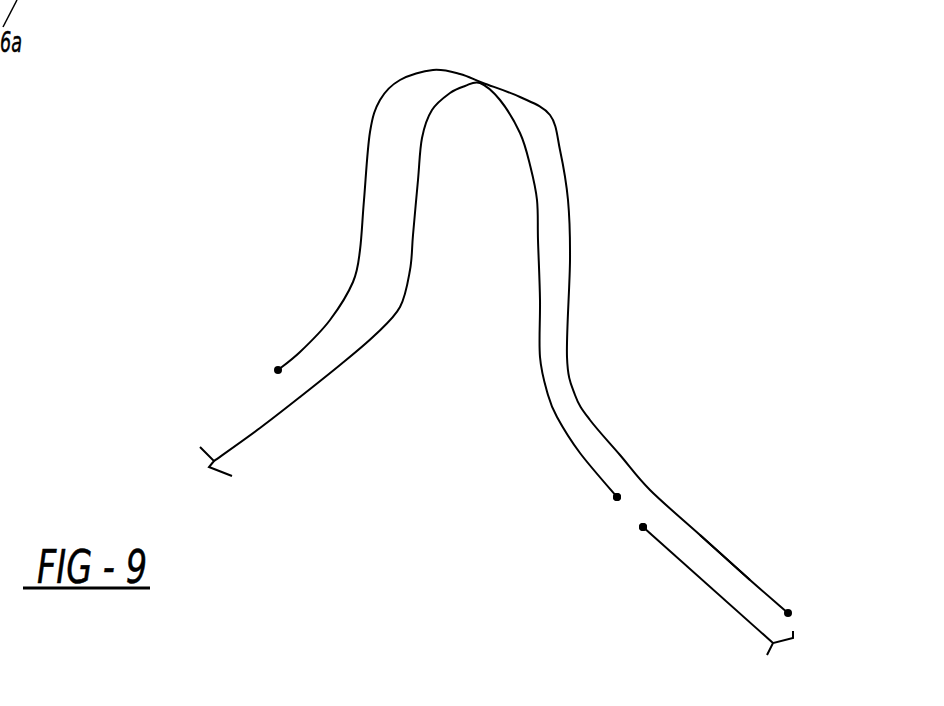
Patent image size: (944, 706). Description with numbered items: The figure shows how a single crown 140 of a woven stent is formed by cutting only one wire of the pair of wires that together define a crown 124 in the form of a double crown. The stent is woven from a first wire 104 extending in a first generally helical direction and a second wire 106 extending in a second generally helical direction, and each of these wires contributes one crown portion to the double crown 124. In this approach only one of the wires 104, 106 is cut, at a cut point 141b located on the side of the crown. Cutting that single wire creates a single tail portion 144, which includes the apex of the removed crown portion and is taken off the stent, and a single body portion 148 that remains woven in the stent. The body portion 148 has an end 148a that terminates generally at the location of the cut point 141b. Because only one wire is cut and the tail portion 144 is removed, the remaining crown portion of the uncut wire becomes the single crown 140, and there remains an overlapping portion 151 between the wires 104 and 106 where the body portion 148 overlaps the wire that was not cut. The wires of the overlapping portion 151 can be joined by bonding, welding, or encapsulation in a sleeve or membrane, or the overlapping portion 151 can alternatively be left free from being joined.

The crown 124 is at (495, 64).
The single crown 140 is at (553, 117).
The single tail portion 144 is at (537, 207).
The first wire 104 is at (597, 430).
The second wire 106 is at (557, 420).
The overlapping portion 151 is at (732, 537).
The cut point 141b is at (628, 513).
The body portion 148 is at (683, 563).
The end 148a is at (163, 0).